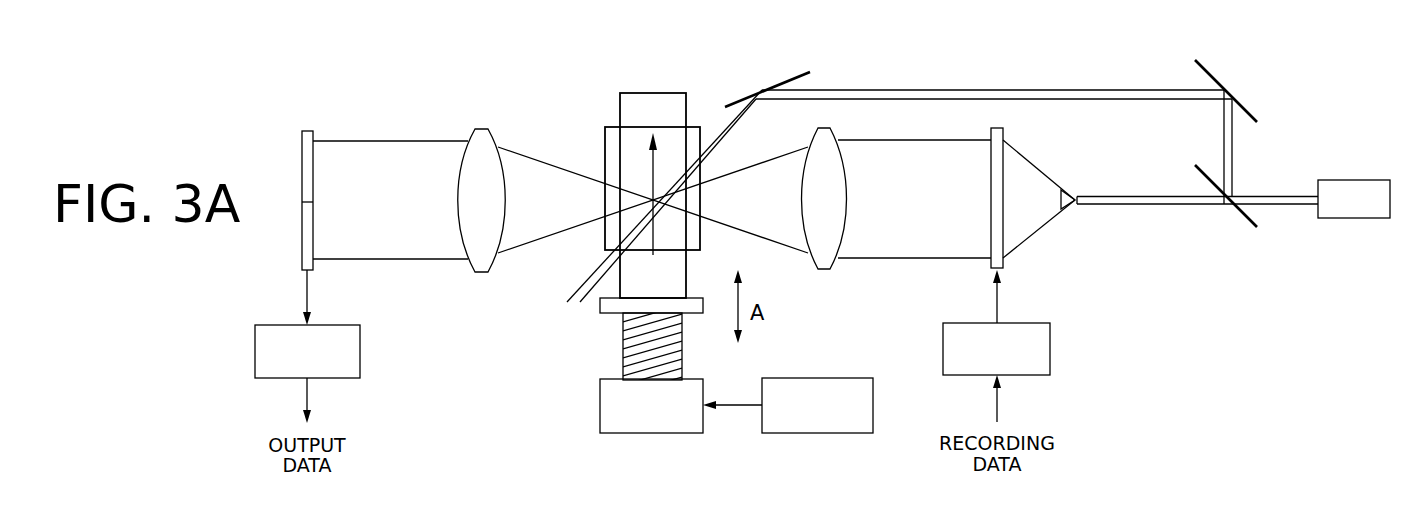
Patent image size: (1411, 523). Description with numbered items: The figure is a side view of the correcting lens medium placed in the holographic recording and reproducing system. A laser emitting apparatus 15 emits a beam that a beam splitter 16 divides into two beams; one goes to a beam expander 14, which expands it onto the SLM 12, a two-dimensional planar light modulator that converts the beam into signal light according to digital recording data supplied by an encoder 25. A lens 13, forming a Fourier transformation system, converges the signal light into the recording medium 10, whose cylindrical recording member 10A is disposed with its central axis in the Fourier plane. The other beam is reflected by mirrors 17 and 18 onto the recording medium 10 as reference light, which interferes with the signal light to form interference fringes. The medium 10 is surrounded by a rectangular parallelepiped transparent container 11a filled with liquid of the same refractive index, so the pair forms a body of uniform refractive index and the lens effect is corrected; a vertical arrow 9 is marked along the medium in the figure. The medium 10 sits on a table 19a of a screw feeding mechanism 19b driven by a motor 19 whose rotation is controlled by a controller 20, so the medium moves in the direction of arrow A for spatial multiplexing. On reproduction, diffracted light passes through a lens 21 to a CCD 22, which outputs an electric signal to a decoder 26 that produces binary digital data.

The magnetization direction arrow 9 is at (650, 163).
The recording medium 10 is at (662, 92).
The recording member 10A is at (637, 99).
The transparent container 11a is at (605, 235).
The SLM 12 is at (1003, 128).
The lens 13 is at (820, 269).
The beam expander 14 is at (1073, 205).
The laser emitting apparatus 15 is at (1353, 218).
The beam splitter 16 is at (1247, 218).
The mirror 17 is at (1248, 112).
The mirror 18 is at (800, 74).
The motor 19 is at (648, 433).
The table 19a is at (600, 308).
The screw feeding mechanism 19b is at (623, 355).
The controller 20 is at (815, 433).
The lens 21 is at (481, 128).
The CCD 22 is at (306, 130).
The encoder 25 is at (1050, 350).
The decoder 26 is at (360, 355).